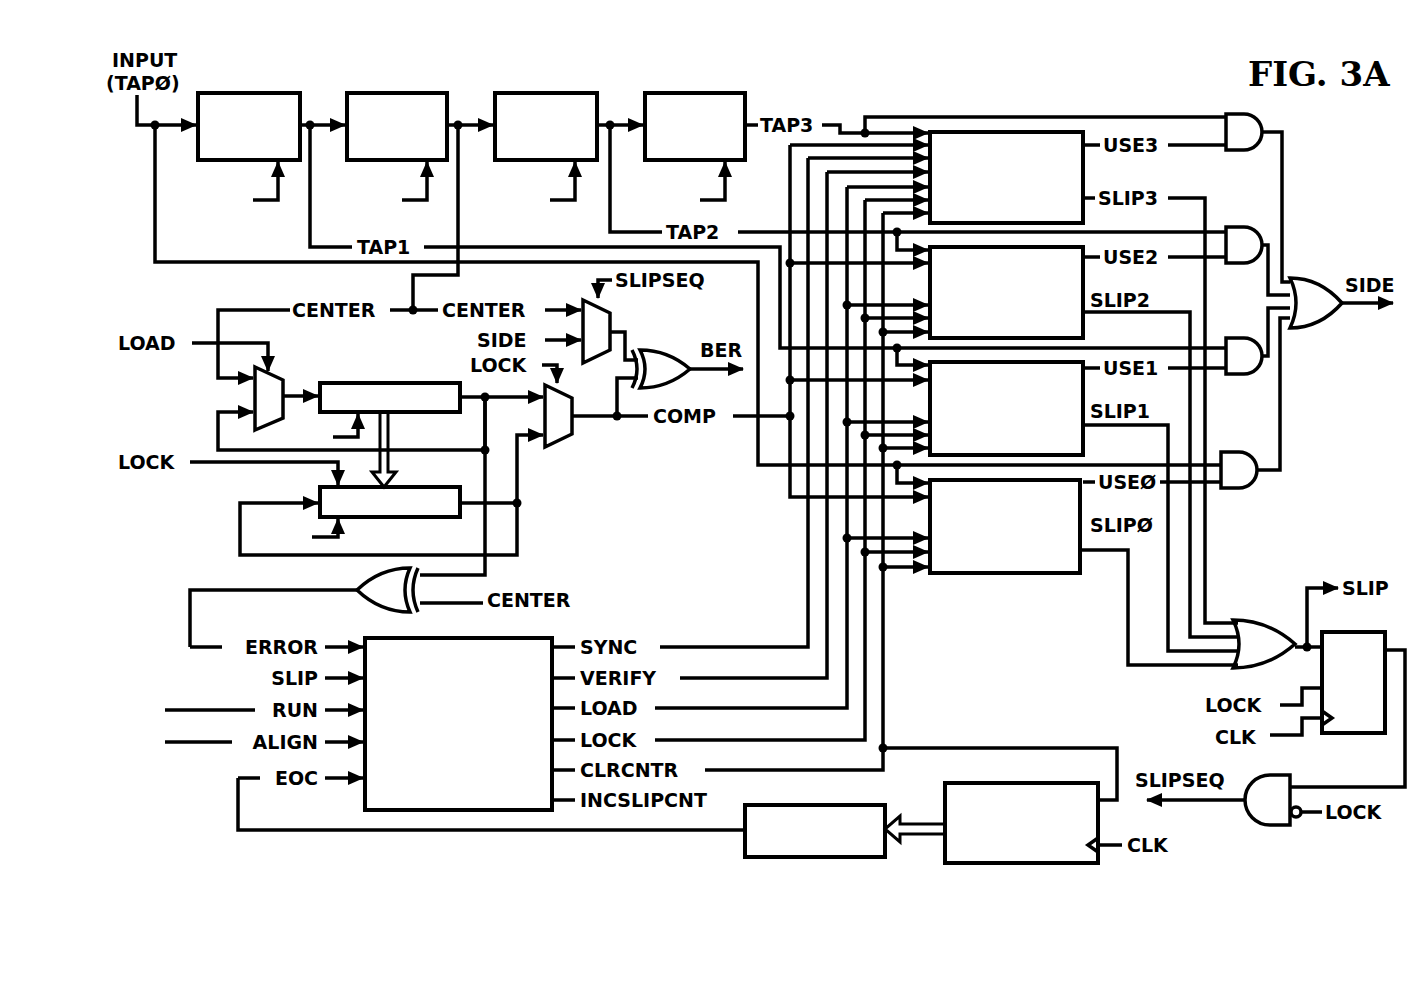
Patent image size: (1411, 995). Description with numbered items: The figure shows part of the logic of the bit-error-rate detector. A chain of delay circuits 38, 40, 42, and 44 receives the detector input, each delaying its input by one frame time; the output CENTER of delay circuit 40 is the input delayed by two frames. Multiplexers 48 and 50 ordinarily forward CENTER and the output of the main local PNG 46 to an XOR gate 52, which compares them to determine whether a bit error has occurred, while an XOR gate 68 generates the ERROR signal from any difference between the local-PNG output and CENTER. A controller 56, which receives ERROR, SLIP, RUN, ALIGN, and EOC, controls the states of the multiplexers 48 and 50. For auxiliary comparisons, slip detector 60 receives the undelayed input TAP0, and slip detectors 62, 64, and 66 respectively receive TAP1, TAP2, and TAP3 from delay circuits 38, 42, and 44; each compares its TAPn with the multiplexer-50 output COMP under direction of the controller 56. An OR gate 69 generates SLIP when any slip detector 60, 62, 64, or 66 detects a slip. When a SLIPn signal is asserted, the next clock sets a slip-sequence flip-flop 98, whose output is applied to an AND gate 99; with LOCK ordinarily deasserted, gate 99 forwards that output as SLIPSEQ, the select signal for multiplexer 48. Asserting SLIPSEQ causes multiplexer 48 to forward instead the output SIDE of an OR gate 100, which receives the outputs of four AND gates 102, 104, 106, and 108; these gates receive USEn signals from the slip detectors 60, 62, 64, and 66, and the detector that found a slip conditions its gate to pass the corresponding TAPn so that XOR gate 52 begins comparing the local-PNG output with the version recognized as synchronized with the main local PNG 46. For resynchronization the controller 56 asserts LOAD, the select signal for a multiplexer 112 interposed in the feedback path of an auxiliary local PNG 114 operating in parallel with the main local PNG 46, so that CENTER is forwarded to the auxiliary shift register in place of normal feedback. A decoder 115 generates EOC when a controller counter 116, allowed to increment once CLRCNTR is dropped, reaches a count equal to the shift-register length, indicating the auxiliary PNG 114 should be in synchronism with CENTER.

The delay circuit 38 is at (245, 93).
The delay circuit 40 is at (393, 93).
The delay circuit 42 is at (542, 93).
The delay circuit 44 is at (692, 93).
The main local PNG 46 is at (212, 532).
The multiplexer 48 is at (608, 308).
The multiplexer 50 is at (563, 447).
The XOR gate 52 is at (690, 350).
The controller 56 is at (425, 638).
The slip detector 60 is at (1020, 573).
The slip detector 62 is at (1083, 440).
The slip detector 64 is at (1083, 330).
The slip detector 66 is at (1083, 188).
The XOR gate 68 is at (358, 600).
The OR gate 69 is at (1258, 620).
The slip-sequence flip-flop 98 is at (1368, 733).
The AND gate 99 is at (1245, 815).
The OR gate 100 is at (1315, 280).
The AND gate 102 is at (1240, 488).
The AND gate 104 is at (1248, 374).
The AND gate 106 is at (1248, 263).
The AND gate 108 is at (1248, 150).
The multiplexer 112 is at (283, 375).
The auxiliary local PNG 114 is at (198, 428).
The decoder 115 is at (828, 805).
The controller counter 116 is at (1010, 783).